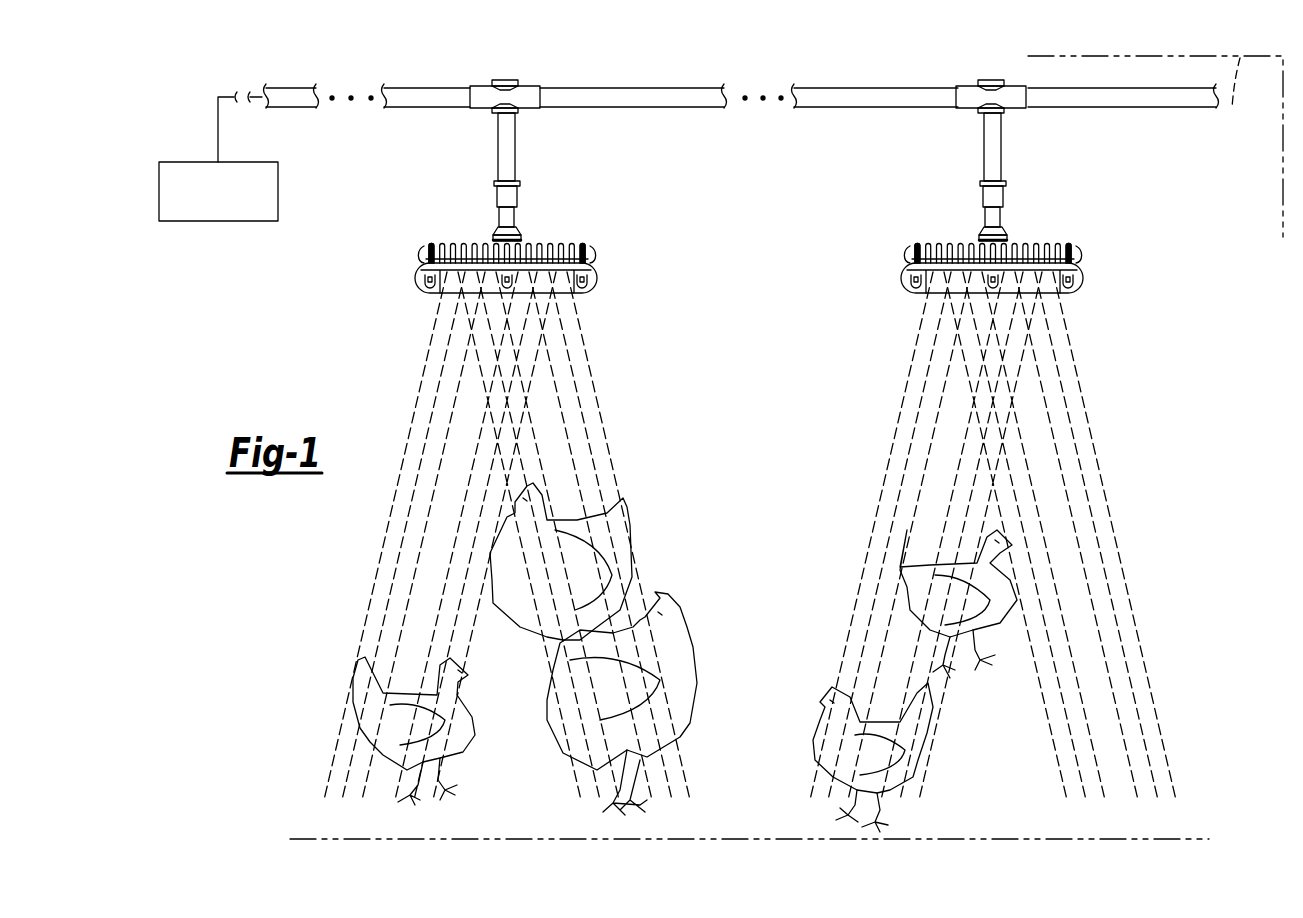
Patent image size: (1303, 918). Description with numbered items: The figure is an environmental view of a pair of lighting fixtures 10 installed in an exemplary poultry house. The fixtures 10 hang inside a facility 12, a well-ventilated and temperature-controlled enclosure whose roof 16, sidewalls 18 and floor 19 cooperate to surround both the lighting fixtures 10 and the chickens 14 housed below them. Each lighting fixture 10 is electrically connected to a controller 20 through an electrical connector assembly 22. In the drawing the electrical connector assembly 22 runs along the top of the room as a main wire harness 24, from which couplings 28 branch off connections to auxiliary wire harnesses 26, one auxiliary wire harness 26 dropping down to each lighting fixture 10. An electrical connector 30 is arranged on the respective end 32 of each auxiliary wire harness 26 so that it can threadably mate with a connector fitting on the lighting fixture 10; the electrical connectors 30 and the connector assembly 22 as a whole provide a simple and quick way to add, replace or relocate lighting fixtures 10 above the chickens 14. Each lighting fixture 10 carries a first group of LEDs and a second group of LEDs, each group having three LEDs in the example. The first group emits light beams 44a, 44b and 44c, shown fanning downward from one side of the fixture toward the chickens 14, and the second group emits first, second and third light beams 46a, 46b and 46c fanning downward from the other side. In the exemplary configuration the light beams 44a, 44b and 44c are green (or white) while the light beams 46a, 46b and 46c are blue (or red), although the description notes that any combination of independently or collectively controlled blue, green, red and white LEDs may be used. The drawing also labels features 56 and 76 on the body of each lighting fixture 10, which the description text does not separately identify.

The lighting fixture 10 is at (802, 249).
The facility 12 is at (1248, 56).
The chickens 14 is at (690, 633).
The roof 16 is at (1233, 99).
The sidewalls 18 is at (1283, 192).
The floor 19 is at (1198, 839).
The controller 20 is at (280, 190).
The electrical connector assembly 22 is at (810, 124).
The main wire harness 24 is at (683, 109).
The auxiliary wire harness 26 is at (718, 147).
The coupling 28 is at (743, 78).
The electrical connector 30 is at (803, 207).
The end of auxiliary wire harness 32 is at (697, 204).
The light beam 44a is at (627, 536).
The light beam 44b is at (632, 536).
The light beam 44c is at (642, 536).
The first light beam 46a is at (853, 536).
The second light beam 46b is at (863, 536).
The third light beam 46c is at (871, 536).
The heat sink fins 56 is at (725, 244).
The light sources / lenses 76 is at (771, 292).